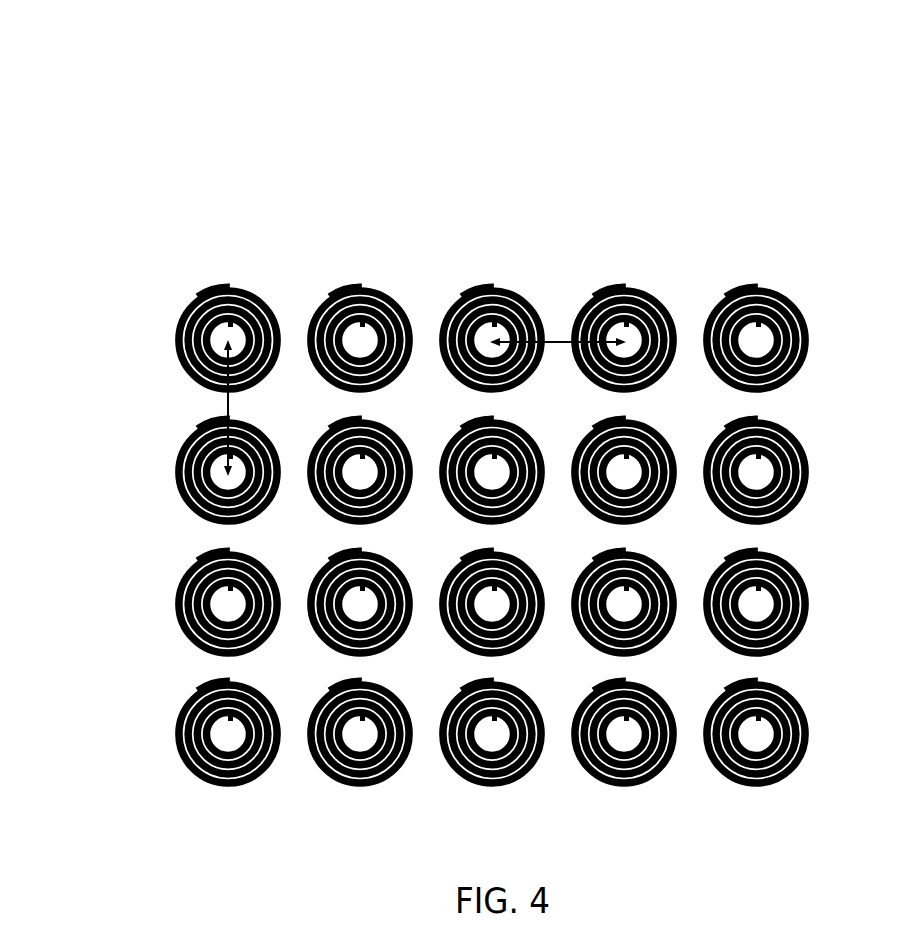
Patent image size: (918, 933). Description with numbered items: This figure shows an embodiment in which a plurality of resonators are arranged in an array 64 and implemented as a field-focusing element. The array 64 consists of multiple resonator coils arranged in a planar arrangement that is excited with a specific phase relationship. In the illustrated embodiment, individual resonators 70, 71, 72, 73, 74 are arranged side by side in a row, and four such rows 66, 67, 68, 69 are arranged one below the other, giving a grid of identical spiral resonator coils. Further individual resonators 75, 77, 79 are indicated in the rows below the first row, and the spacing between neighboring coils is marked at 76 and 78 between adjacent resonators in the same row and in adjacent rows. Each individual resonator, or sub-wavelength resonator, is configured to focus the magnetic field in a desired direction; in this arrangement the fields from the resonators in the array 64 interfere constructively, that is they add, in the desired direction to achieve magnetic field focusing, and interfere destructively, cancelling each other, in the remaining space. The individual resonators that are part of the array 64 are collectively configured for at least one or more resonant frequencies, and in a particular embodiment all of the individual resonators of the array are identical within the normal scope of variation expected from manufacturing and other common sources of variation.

The array 64 is at (123, 72).
The row 66 is at (143, 339).
The row 67 is at (143, 471).
The row 68 is at (143, 603).
The row 69 is at (143, 733).
The individual resonator 70 is at (241, 290).
The individual resonator 71 is at (370, 290).
The individual resonator 72 is at (506, 290).
The individual resonator 73 is at (638, 290).
The individual resonator 74 is at (770, 290).
The individual resonator 75 is at (244, 422).
The individual resonator 76 is at (553, 338).
The individual resonator 77 is at (250, 556).
The vertical coil spacing 78 is at (224, 410).
The spiral coil (fourth row, first column) 79 is at (250, 688).